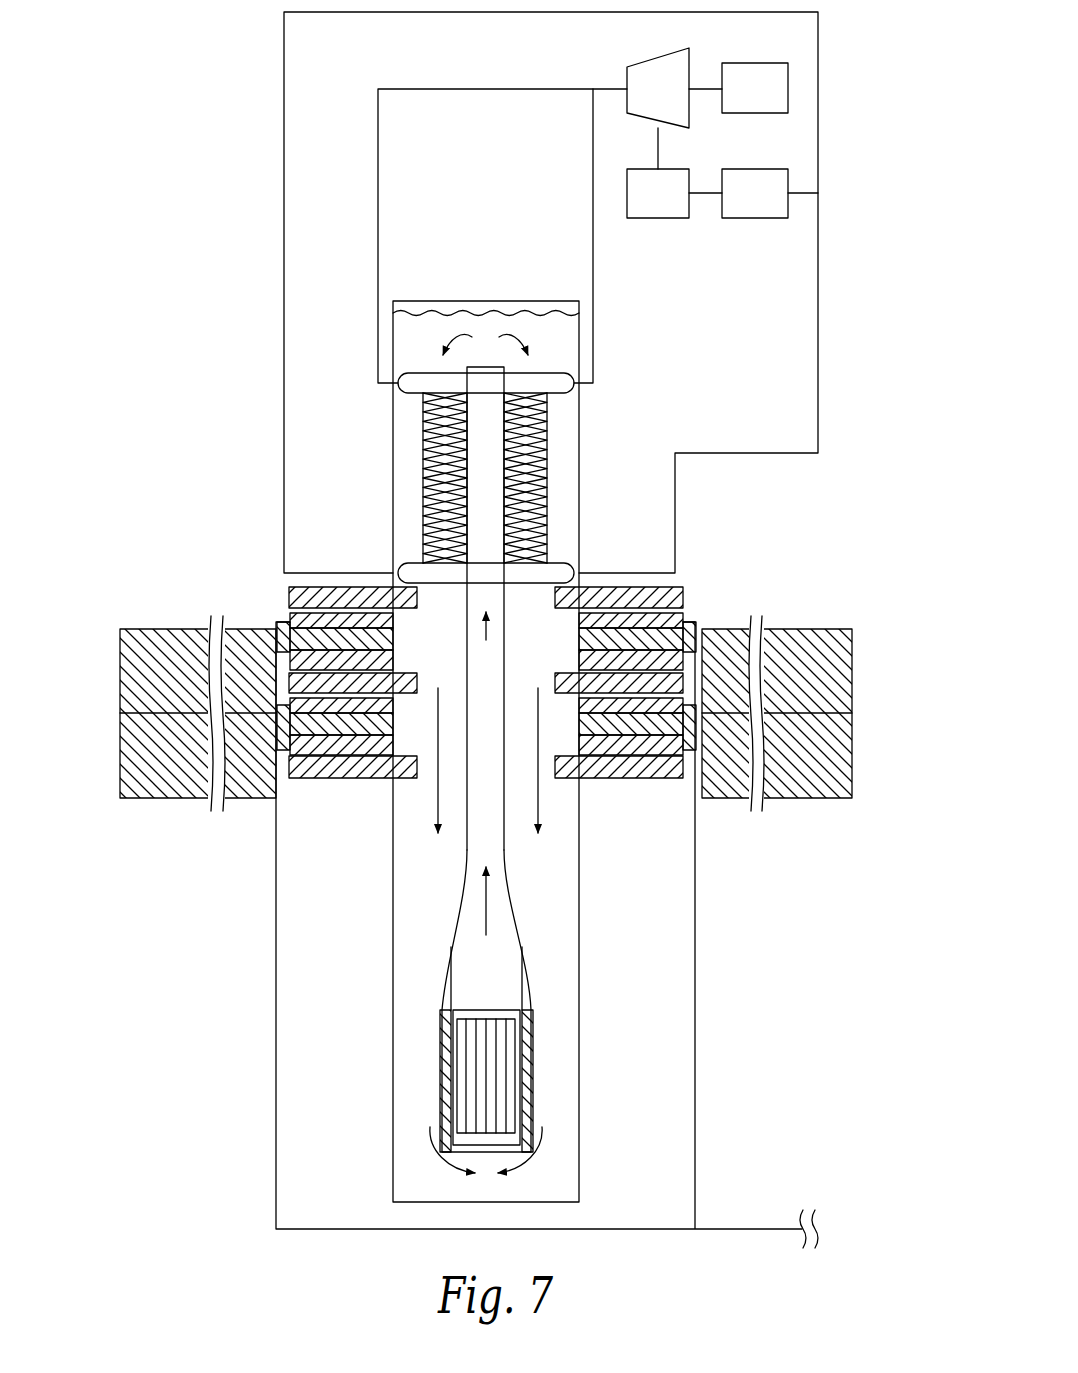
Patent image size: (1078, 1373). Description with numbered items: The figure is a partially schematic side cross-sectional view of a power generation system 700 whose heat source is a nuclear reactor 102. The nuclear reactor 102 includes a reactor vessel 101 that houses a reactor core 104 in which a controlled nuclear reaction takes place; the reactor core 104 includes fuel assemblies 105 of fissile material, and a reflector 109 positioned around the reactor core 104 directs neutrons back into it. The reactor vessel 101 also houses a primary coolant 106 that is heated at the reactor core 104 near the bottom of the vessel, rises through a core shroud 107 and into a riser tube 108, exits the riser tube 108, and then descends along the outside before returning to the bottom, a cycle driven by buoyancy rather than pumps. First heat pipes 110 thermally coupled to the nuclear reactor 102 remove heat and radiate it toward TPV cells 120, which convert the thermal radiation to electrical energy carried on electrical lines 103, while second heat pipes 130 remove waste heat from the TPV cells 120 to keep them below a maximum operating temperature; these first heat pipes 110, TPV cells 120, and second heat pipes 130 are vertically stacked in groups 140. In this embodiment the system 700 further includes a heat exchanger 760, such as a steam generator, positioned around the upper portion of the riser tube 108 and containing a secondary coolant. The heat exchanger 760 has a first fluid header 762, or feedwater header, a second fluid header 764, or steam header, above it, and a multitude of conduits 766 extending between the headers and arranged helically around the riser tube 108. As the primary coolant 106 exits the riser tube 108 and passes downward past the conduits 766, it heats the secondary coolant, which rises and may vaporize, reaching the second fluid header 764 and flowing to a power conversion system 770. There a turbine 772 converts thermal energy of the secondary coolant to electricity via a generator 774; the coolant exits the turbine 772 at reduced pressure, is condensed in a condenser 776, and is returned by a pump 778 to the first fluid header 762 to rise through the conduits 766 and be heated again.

The power generation system 700 is at (197, 178).
The power conversion system 770 is at (834, 105).
The turbine 772 is at (639, 105).
The generator 774 is at (736, 105).
The condenser 776 is at (639, 210).
The pump 778 is at (736, 210).
The coolant 106 is at (497, 313).
The heat exchanger 760 is at (562, 462).
The second fluid header 764 is at (398, 383).
The first fluid header 762 is at (398, 568).
The conduits 766 is at (423, 498).
The second heat pipes 130 is at (137, 752).
The groups 140 is at (862, 778).
The TPV cells 120 is at (370, 740).
The first heat pipes 110 is at (645, 640).
The riser tube 108 is at (467, 850).
The core shroud 107 is at (443, 973).
The reactor core 104 is at (445, 1012).
The reflector 109 is at (440, 1097).
The fuel assemblies 105 is at (510, 1072).
The nuclear reactor 102 is at (598, 918).
The reactor vessel 101 is at (581, 967).
The electrical lines 103 is at (276, 1048).